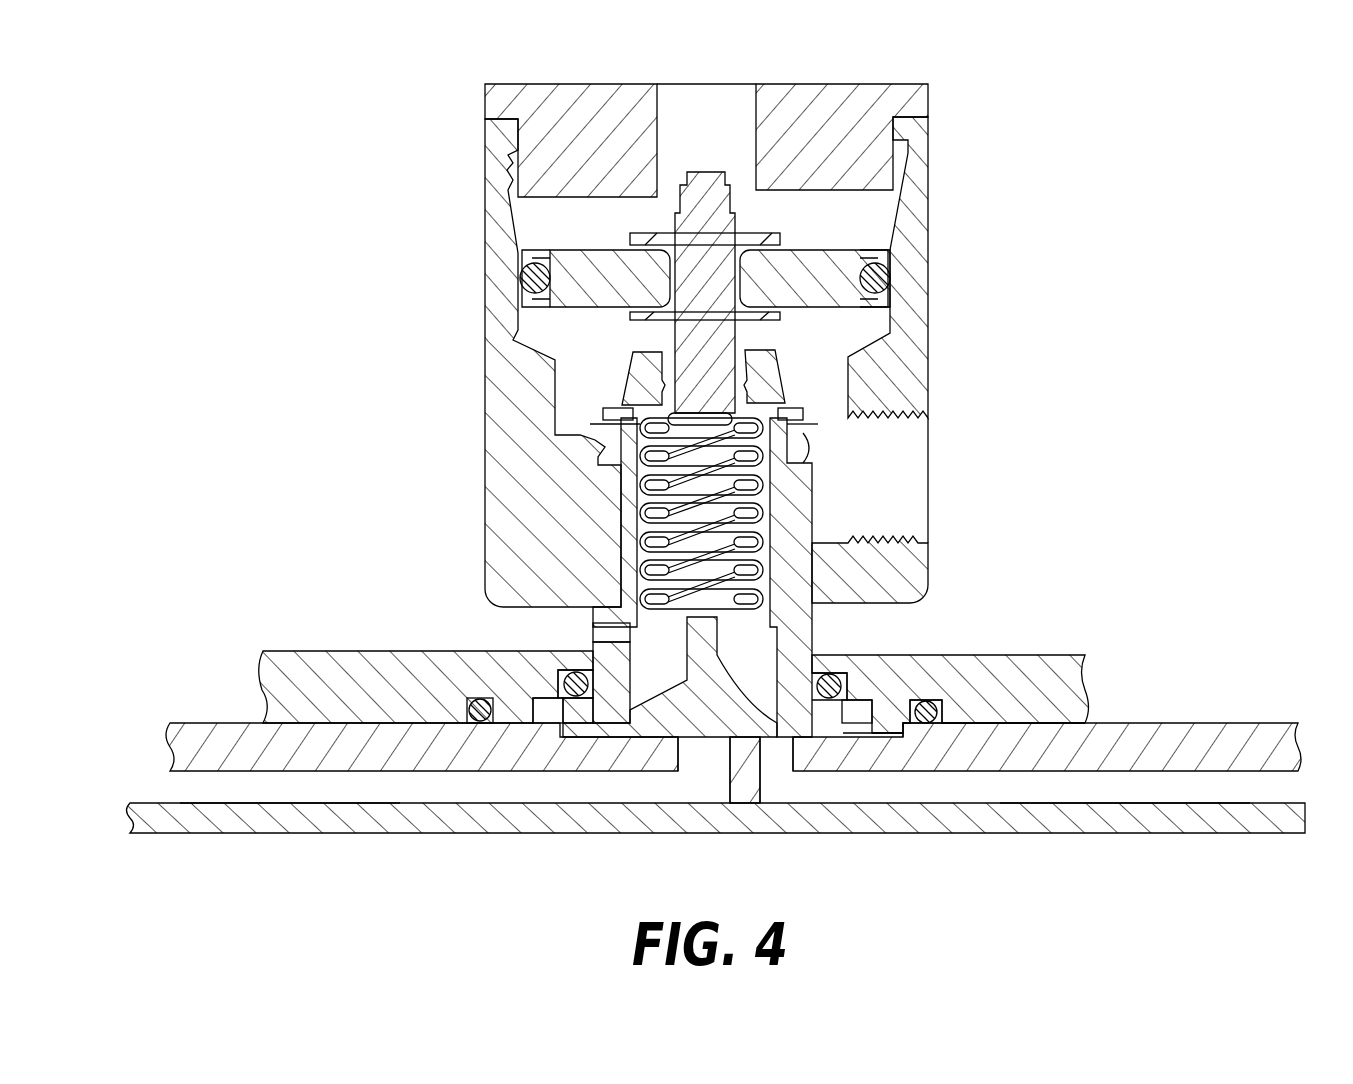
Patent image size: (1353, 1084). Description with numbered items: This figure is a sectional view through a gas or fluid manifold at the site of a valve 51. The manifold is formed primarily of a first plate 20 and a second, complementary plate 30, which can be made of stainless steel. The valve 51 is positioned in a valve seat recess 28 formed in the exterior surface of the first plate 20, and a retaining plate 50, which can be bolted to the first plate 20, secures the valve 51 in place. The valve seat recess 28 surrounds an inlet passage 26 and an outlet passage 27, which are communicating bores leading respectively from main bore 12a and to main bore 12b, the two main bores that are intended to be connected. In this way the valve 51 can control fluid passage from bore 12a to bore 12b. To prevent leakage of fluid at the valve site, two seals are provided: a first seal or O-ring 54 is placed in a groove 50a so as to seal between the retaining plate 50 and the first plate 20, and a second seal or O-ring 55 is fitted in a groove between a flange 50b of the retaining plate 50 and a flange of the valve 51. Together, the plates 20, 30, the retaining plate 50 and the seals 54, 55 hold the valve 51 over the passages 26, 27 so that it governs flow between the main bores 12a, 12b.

The valve 51 is at (928, 300).
The retaining plate 50 is at (694, 655).
The groove 50a is at (943, 703).
The flange of the retaining plate 50b is at (827, 673).
The first seal or O-ring 54 is at (925, 707).
The second seal or O-ring 55 is at (877, 662).
The first plate 20 is at (733, 767).
The main bore 12a is at (263, 802).
The main bore 12b is at (1110, 805).
The inlet passage 26 is at (700, 787).
The outlet passage 27 is at (787, 797).
The valve seat recess 28 is at (907, 728).
The second plate 30 is at (731, 850).